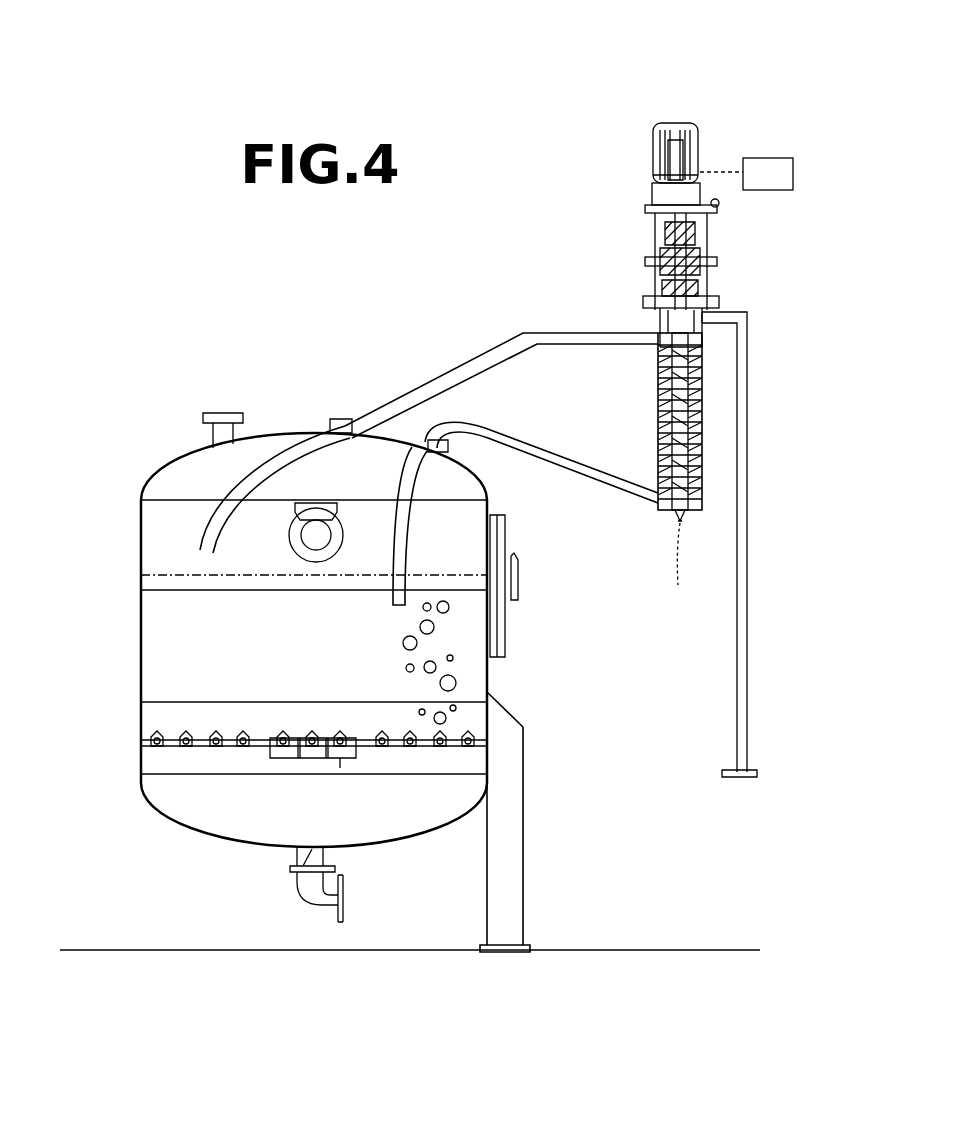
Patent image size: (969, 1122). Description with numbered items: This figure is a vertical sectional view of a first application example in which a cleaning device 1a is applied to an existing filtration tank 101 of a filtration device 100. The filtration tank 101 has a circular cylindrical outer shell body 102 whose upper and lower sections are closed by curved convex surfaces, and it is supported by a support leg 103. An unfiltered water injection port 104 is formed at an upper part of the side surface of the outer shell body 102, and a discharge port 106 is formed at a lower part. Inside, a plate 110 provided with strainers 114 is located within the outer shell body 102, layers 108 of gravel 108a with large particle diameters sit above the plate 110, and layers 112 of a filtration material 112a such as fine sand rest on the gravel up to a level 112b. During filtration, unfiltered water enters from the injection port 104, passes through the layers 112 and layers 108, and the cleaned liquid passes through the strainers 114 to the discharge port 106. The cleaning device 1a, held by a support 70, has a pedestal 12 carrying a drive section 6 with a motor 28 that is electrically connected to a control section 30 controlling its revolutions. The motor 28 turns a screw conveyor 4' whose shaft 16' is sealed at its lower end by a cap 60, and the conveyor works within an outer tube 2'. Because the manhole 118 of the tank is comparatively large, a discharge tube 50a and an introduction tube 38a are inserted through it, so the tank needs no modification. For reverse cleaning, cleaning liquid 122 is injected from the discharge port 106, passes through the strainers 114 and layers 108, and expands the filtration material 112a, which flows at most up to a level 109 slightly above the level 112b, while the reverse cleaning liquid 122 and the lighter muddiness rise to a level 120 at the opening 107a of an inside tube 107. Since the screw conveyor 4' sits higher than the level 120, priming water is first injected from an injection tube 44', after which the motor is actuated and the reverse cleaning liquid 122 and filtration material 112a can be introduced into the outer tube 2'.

The cleaning device 1a is at (728, 138).
The outer tube 2' is at (728, 421).
The screw conveyor 4' is at (722, 422).
The drive section 6 is at (627, 181).
The pedestal 12 is at (723, 241).
The shaft 16' is at (734, 428).
The motor 28 is at (645, 154).
The control section 30 is at (773, 160).
The introduction tube 38a is at (585, 470).
The injection tube 44' is at (678, 568).
The discharge tube 50a is at (573, 343).
The cap 60 is at (670, 520).
The support 70 is at (758, 404).
The filtration device 100 is at (259, 329).
The filtration tank 101 is at (190, 445).
The outer shell body 102 is at (148, 478).
The support leg 103 is at (515, 826).
The unfiltered water injection port 104 is at (333, 533).
The discharge port 106 is at (305, 864).
The inside tube 107 is at (288, 526).
The opening of inside tube 107a is at (306, 505).
The layers of gravel 108 is at (155, 713).
The gravel 108a is at (455, 712).
The level 109 is at (417, 572).
The plate 110 is at (455, 748).
The layers of filtration material 112 is at (157, 616).
The filtration material 112a is at (458, 684).
The level 112b is at (142, 580).
The strainers 114 is at (141, 745).
The manhole 118 is at (350, 423).
The level 120 is at (172, 492).
The reverse cleaning liquid 122 is at (190, 527).